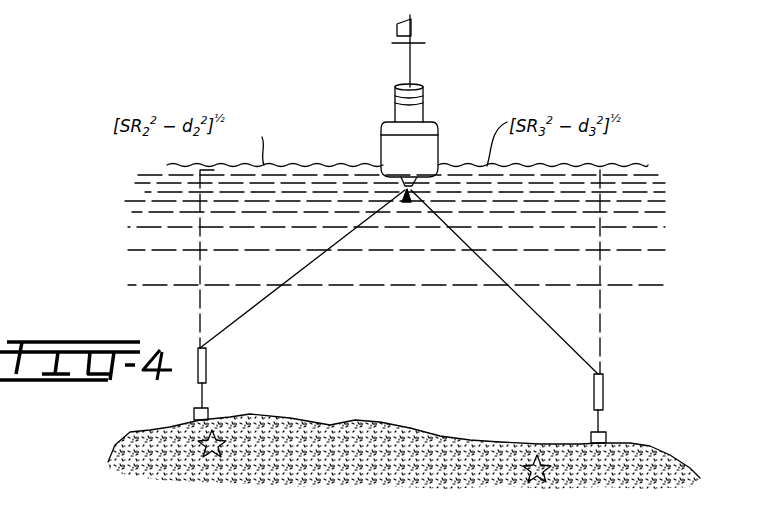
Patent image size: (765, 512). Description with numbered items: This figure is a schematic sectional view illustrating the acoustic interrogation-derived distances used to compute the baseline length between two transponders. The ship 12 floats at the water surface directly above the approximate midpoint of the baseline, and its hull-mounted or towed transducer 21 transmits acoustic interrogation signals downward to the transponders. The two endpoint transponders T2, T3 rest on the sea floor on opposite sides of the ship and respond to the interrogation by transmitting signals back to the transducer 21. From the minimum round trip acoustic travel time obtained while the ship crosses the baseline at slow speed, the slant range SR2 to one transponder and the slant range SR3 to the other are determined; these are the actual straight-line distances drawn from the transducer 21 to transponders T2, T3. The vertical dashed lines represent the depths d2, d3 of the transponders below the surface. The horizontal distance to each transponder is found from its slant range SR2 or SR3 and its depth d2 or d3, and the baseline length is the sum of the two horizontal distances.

The ship 12 is at (428, 130).
The transducer 21 is at (406, 199).
The slant range to transponder T2 SR2 is at (258, 302).
The slant range to transponder T3 SR3 is at (522, 300).
The depth of transponder T2 d2 is at (198, 314).
The depth of transponder T3 d3 is at (601, 302).
The transponder T2 is at (207, 368).
The transponder T3 is at (604, 395).